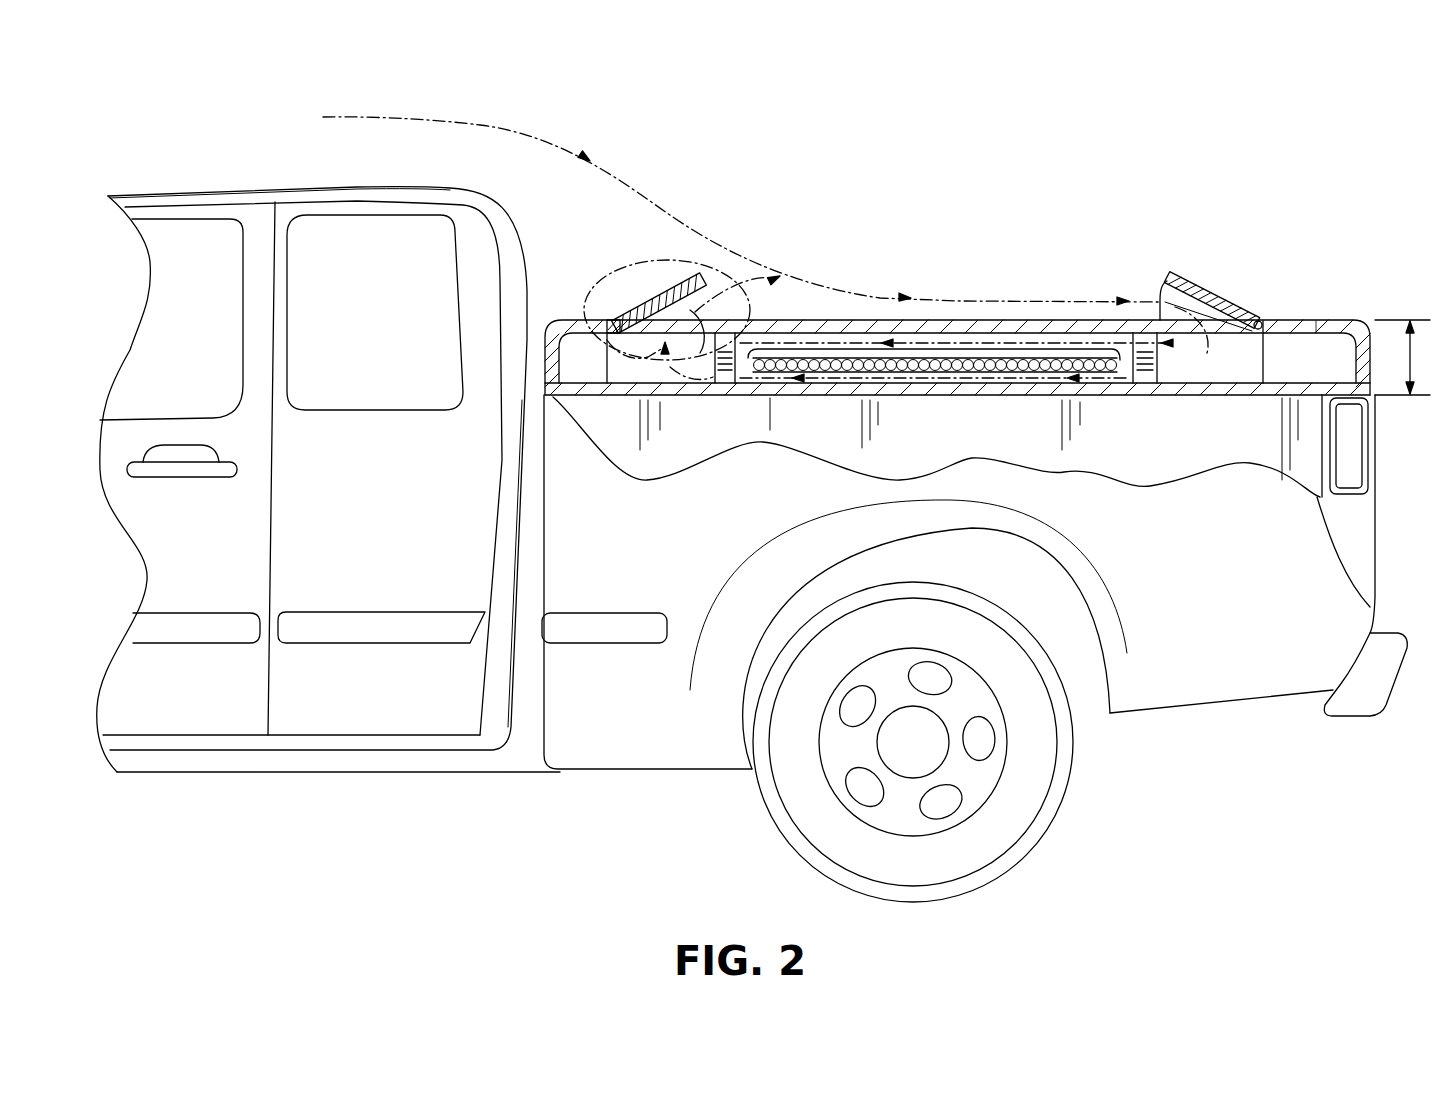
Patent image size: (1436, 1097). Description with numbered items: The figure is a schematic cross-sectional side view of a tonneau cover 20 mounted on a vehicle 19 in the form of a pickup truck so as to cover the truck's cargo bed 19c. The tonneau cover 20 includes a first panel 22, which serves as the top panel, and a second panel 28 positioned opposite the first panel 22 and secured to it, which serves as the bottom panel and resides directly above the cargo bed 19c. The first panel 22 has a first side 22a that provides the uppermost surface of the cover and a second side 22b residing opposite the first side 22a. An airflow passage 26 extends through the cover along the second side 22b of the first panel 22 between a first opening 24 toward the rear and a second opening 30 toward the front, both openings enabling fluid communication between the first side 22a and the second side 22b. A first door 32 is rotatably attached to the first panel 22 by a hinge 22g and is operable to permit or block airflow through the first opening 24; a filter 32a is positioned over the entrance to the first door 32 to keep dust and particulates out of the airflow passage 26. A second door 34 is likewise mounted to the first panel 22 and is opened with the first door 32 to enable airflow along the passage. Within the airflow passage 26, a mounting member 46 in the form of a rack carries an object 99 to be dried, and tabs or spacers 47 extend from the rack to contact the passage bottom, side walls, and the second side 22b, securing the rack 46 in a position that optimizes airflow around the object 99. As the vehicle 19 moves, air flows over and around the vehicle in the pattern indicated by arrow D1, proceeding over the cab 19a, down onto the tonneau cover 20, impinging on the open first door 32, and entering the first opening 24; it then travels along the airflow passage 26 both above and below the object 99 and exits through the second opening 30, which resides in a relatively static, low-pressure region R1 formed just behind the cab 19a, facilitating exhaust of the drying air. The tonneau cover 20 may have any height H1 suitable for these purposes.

The vehicle 19 is at (153, 157).
The vehicle cab 19a is at (308, 187).
The cargo bed 19c is at (818, 430).
The tonneau cover 20 is at (890, 255).
The first panel 22 is at (800, 327).
The first side of the first panel 22a is at (1293, 320).
The second side of the first panel 22b is at (1323, 320).
The hinge 22g is at (1260, 320).
The first opening 24 is at (1210, 323).
The airflow passage 26 is at (973, 340).
The second panel 28 is at (600, 395).
The second opening 30 is at (663, 317).
The first door 32 is at (1177, 277).
The filter 32a is at (1157, 297).
The second door 34 is at (650, 300).
The mounting member 46 is at (750, 395).
The tabs or spacers 47 is at (723, 383).
The object 99 is at (1020, 350).
The airflow arrow D1 is at (470, 123).
The low-pressure region R1 is at (740, 270).
The height of the tonneau cover H1 is at (1402, 357).